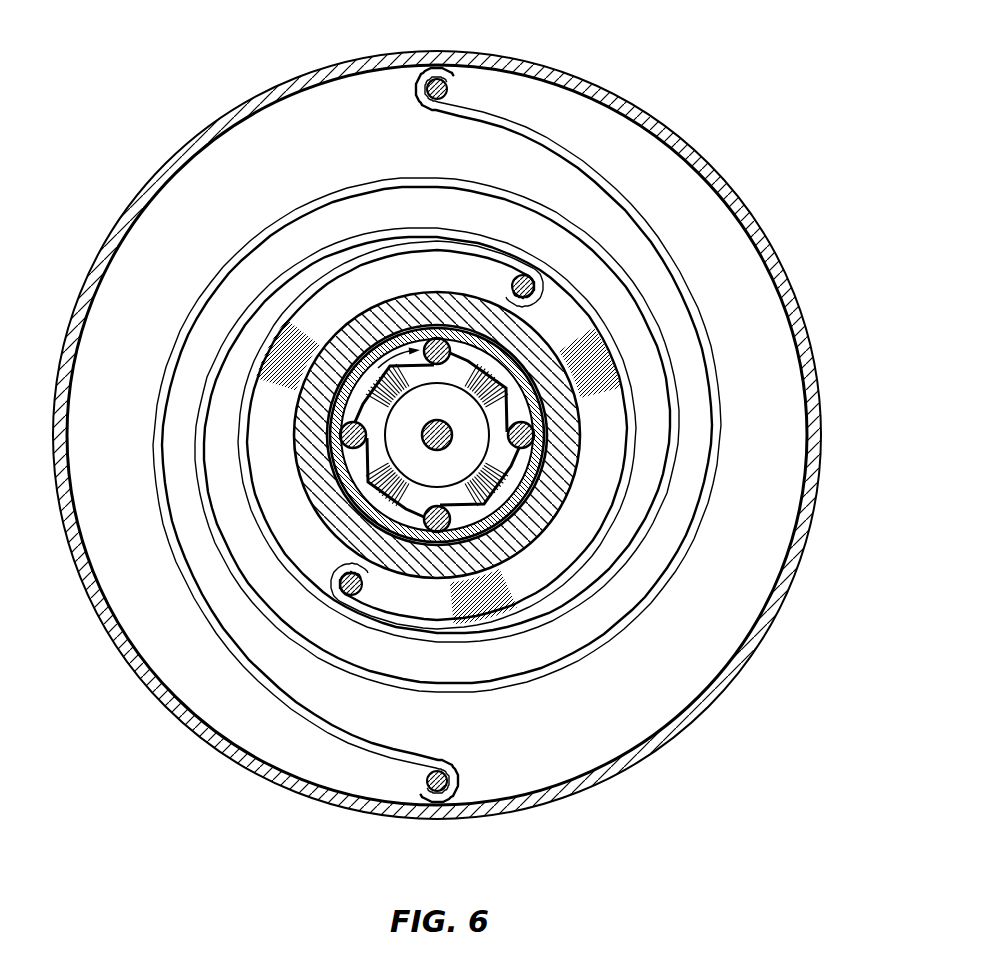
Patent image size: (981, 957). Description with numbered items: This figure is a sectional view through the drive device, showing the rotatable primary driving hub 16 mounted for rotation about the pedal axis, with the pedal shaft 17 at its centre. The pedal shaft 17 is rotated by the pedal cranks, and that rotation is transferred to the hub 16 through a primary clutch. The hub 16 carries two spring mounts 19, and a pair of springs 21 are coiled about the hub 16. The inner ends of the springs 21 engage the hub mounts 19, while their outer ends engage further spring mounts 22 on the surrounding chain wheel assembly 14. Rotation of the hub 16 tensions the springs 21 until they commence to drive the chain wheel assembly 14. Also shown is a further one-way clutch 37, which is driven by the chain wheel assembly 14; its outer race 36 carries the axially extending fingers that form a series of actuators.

The chain wheel assembly 14 is at (193, 88).
The primary driving hub 16 is at (562, 461).
The pedal shaft 17 is at (422, 431).
The spring mount 19 is at (518, 278).
The spring 21 is at (622, 196).
The spring mount 22 is at (456, 84).
The outer race 36 is at (567, 467).
The one-way clutch 37 is at (340, 448).